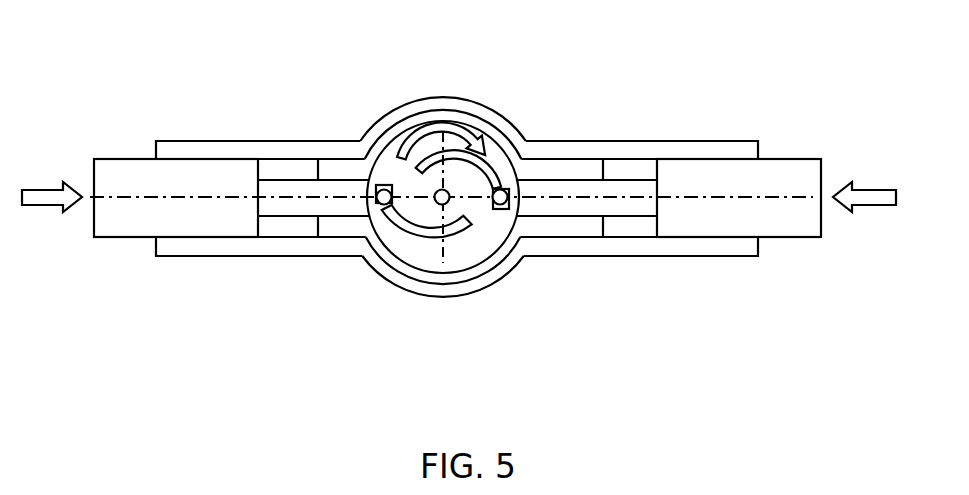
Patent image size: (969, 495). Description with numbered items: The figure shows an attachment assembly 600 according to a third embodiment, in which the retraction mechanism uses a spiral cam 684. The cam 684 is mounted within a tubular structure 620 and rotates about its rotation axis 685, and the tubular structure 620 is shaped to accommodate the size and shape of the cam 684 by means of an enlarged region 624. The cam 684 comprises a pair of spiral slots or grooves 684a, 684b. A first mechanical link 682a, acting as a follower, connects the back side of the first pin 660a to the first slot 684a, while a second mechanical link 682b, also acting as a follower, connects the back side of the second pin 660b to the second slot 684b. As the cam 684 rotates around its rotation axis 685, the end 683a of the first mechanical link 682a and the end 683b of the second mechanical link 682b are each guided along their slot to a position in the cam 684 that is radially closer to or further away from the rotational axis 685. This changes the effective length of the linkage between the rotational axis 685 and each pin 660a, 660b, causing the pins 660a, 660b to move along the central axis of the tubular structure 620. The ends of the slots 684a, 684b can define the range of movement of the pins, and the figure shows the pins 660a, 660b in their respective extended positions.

The attachment assembly 600 is at (459, 206).
The tubular structure 620 is at (626, 139).
The rotor chamber ring wall 624 is at (490, 103).
The first pin 660a is at (777, 177).
The second pin 660b is at (133, 168).
The first mechanical link 682a is at (558, 190).
The second mechanical link 682b is at (302, 187).
The end of first mechanical link 683a is at (503, 210).
The end of second mechanical link 683b is at (383, 188).
The spiral cam 684 is at (443, 121).
The first spiral slot 684a is at (492, 176).
The second spiral slot 684b is at (397, 223).
The rotation axis 685 is at (444, 201).